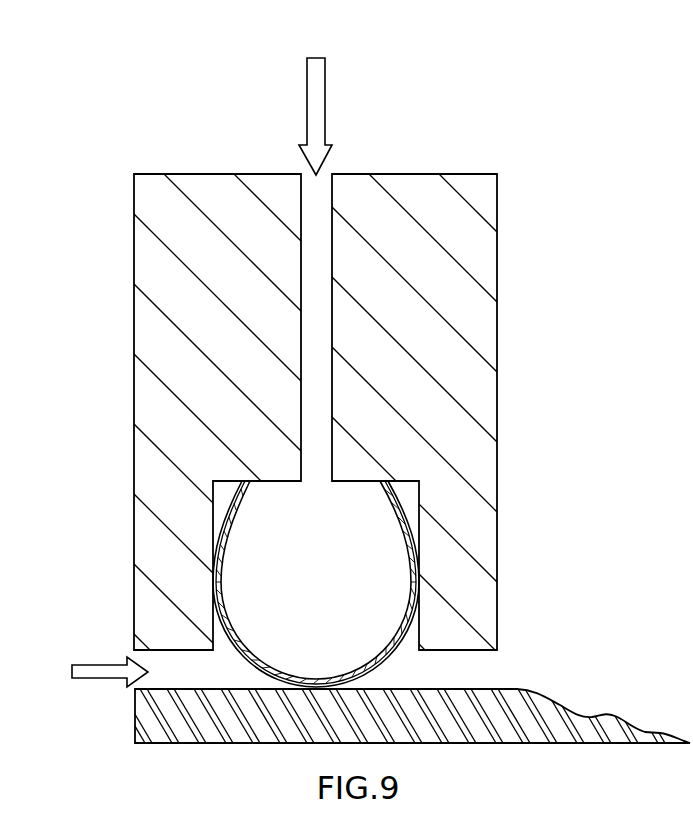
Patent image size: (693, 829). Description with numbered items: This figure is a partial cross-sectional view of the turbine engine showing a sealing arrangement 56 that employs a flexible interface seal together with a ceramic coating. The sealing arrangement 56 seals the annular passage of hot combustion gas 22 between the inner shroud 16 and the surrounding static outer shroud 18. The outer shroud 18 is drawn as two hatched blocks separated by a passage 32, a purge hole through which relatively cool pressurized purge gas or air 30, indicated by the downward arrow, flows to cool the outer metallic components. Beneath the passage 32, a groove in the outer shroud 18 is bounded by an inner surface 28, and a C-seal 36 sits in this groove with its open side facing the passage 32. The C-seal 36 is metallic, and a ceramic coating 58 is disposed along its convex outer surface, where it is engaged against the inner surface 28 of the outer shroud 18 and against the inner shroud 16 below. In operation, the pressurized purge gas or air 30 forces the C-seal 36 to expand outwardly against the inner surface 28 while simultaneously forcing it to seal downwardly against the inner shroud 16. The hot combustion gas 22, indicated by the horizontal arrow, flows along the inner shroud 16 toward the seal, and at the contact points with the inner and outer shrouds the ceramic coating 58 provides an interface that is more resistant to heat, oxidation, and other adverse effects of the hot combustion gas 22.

The sealing arrangement 56 is at (176, 61).
The purge gas or air 30 is at (327, 96).
The passage 32 is at (312, 392).
The outer shroud 18 is at (472, 418).
The inner surface 28 is at (214, 505).
The C-seal 36 is at (293, 672).
The ceramic coating 58 is at (378, 664).
The hot combustion gas 22 is at (116, 679).
The inner shroud 16 is at (223, 743).